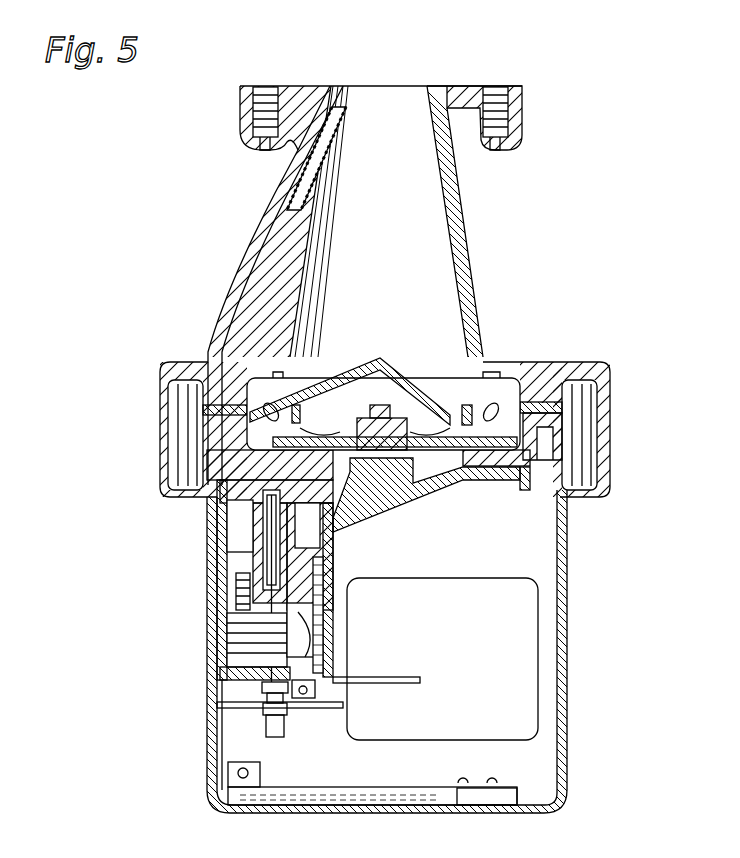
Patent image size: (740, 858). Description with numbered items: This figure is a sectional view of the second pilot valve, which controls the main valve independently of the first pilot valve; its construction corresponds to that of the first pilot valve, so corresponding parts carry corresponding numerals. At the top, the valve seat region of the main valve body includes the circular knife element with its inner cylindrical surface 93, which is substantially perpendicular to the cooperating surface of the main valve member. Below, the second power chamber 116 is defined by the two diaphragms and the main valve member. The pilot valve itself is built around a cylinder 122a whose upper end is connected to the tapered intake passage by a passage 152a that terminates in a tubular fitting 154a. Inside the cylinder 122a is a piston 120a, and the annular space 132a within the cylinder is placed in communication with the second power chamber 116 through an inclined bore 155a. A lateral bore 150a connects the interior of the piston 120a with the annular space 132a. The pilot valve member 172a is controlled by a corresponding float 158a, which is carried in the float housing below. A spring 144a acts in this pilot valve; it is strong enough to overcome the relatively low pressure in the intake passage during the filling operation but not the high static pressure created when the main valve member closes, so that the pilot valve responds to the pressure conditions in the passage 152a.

The inner cylindrical surface 93 is at (468, 370).
The second power chamber 116 is at (517, 380).
The piston 120a is at (210, 578).
The cylinder 122a is at (223, 627).
The annular space 132a is at (238, 527).
The spring 144a is at (227, 658).
The lateral bore 150a is at (295, 538).
The passage 152a is at (262, 273).
The tubular fitting 154a is at (330, 145).
The inclined bore 155a is at (508, 482).
The float 158a is at (465, 720).
The pilot valve member 172a is at (287, 563).